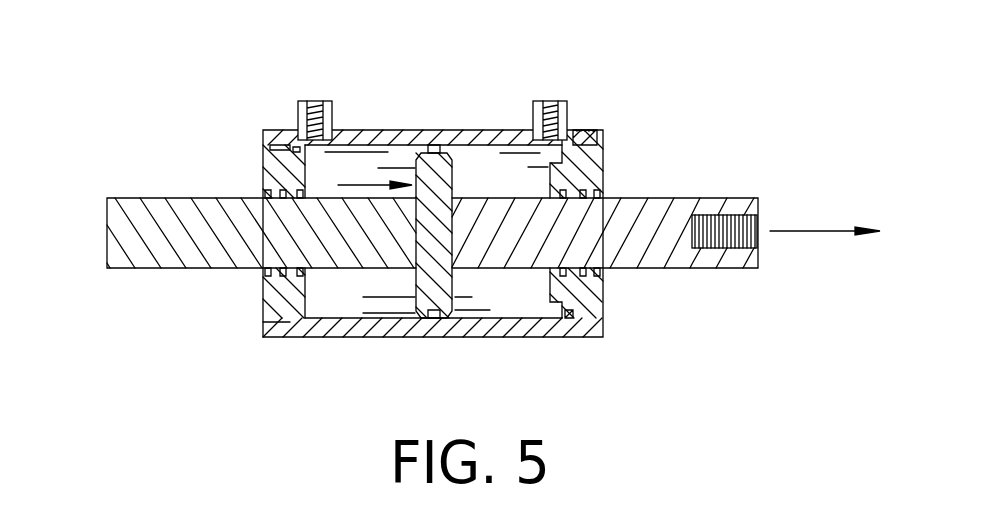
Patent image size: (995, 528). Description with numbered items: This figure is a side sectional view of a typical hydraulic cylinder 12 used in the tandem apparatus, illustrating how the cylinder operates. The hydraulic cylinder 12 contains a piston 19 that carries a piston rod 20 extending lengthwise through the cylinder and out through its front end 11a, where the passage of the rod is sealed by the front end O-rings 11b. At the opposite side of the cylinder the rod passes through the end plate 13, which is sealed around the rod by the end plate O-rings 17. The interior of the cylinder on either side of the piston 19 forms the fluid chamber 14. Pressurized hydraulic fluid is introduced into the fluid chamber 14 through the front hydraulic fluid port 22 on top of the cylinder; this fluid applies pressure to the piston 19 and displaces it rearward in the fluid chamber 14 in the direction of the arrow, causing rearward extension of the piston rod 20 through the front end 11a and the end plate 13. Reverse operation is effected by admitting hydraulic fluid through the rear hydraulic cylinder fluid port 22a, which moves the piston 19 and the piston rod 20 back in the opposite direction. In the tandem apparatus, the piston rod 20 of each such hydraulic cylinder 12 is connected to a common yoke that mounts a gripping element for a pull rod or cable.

The hydraulic cylinder 12 is at (408, 128).
The front hydraulic fluid port 22 is at (314, 106).
The rear hydraulic cylinder fluid port 22a is at (550, 104).
The end plate 13 is at (603, 143).
The end plate O-rings 17 is at (603, 268).
The piston rod 20 is at (727, 197).
The fluid chamber 14 is at (350, 166).
The front end O-rings 11b is at (267, 275).
The front end 11a is at (265, 316).
The piston 19 is at (450, 177).